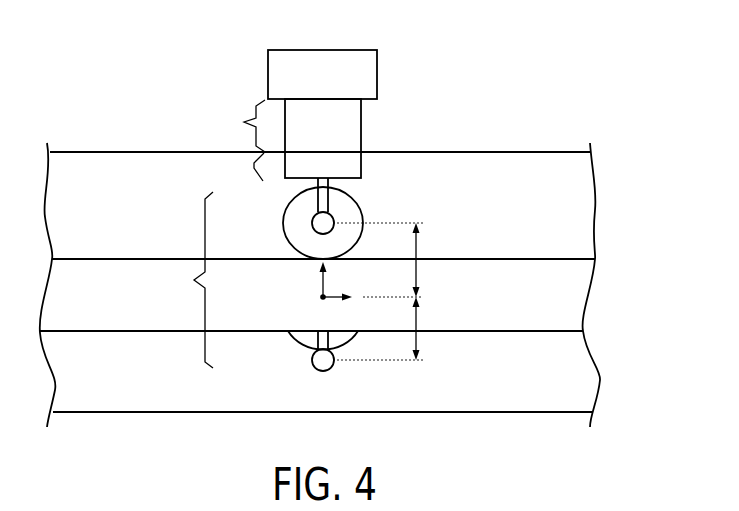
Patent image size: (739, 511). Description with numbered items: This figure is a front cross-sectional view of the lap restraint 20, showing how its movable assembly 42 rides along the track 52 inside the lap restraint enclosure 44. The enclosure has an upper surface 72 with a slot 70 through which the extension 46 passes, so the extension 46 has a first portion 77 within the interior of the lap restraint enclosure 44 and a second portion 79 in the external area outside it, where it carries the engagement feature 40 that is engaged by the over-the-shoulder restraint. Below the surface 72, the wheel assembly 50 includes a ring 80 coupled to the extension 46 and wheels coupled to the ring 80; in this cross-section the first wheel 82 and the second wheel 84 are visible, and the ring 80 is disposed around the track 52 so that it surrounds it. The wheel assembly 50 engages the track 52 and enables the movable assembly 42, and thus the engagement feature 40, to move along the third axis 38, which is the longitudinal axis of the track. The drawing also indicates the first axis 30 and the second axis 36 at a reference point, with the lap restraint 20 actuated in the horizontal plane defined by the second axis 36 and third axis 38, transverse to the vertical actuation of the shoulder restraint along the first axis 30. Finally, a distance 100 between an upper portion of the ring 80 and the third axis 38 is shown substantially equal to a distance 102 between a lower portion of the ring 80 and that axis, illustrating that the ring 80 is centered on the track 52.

The lap restraint 20 is at (160, 60).
The engagement feature 40 is at (377, 72).
The extension 46 is at (361, 142).
The movable assembly 42 is at (375, 203).
The slot 70 is at (182, 148).
The surface 72 is at (478, 152).
The lap restraint enclosure 44 is at (567, 148).
The first portion 77 is at (253, 165).
The second portion 79 is at (239, 126).
The first wheel 82 is at (283, 216).
The second wheel 84 is at (298, 341).
The ring 80 is at (333, 367).
The wheel assembly 50 is at (187, 280).
The track 52 is at (480, 333).
The first axis 30 is at (320, 282).
The second axis 36 is at (320, 298).
The third axis 38 is at (334, 299).
The distance 100 is at (419, 257).
The distance 102 is at (419, 330).